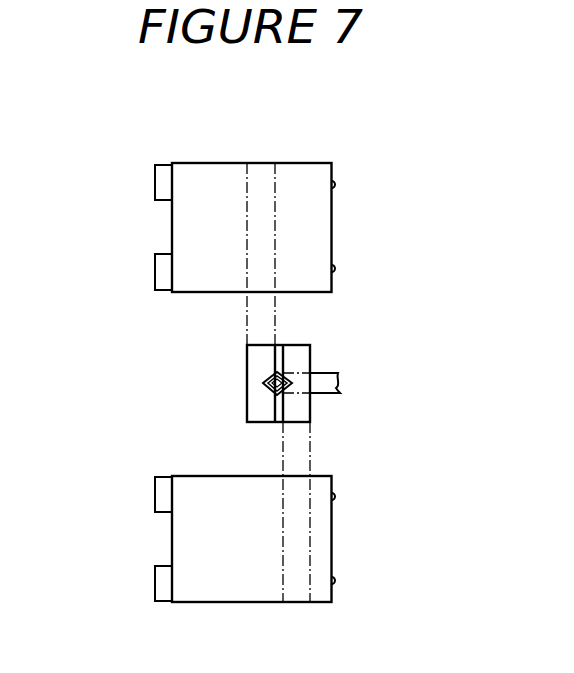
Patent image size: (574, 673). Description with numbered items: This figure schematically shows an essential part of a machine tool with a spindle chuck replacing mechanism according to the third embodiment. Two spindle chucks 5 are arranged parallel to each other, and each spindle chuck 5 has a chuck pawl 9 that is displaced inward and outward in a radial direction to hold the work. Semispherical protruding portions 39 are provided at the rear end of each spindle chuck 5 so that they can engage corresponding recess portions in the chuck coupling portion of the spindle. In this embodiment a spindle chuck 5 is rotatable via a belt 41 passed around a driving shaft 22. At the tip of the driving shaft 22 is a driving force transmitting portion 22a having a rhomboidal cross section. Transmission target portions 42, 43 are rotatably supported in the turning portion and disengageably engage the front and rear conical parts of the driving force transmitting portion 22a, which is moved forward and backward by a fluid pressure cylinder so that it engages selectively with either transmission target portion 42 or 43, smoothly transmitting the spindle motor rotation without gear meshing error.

The spindle chuck 5 is at (212, 176).
The chuck pawl 9 is at (155, 180).
The semispherical protruding portion 39 is at (336, 184).
The belt 41 is at (244, 310).
The driving shaft 22 is at (345, 369).
The driving force transmitting portion 22a is at (310, 373).
The transmission target portion 42 is at (265, 390).
The transmission target portion 43 is at (285, 390).